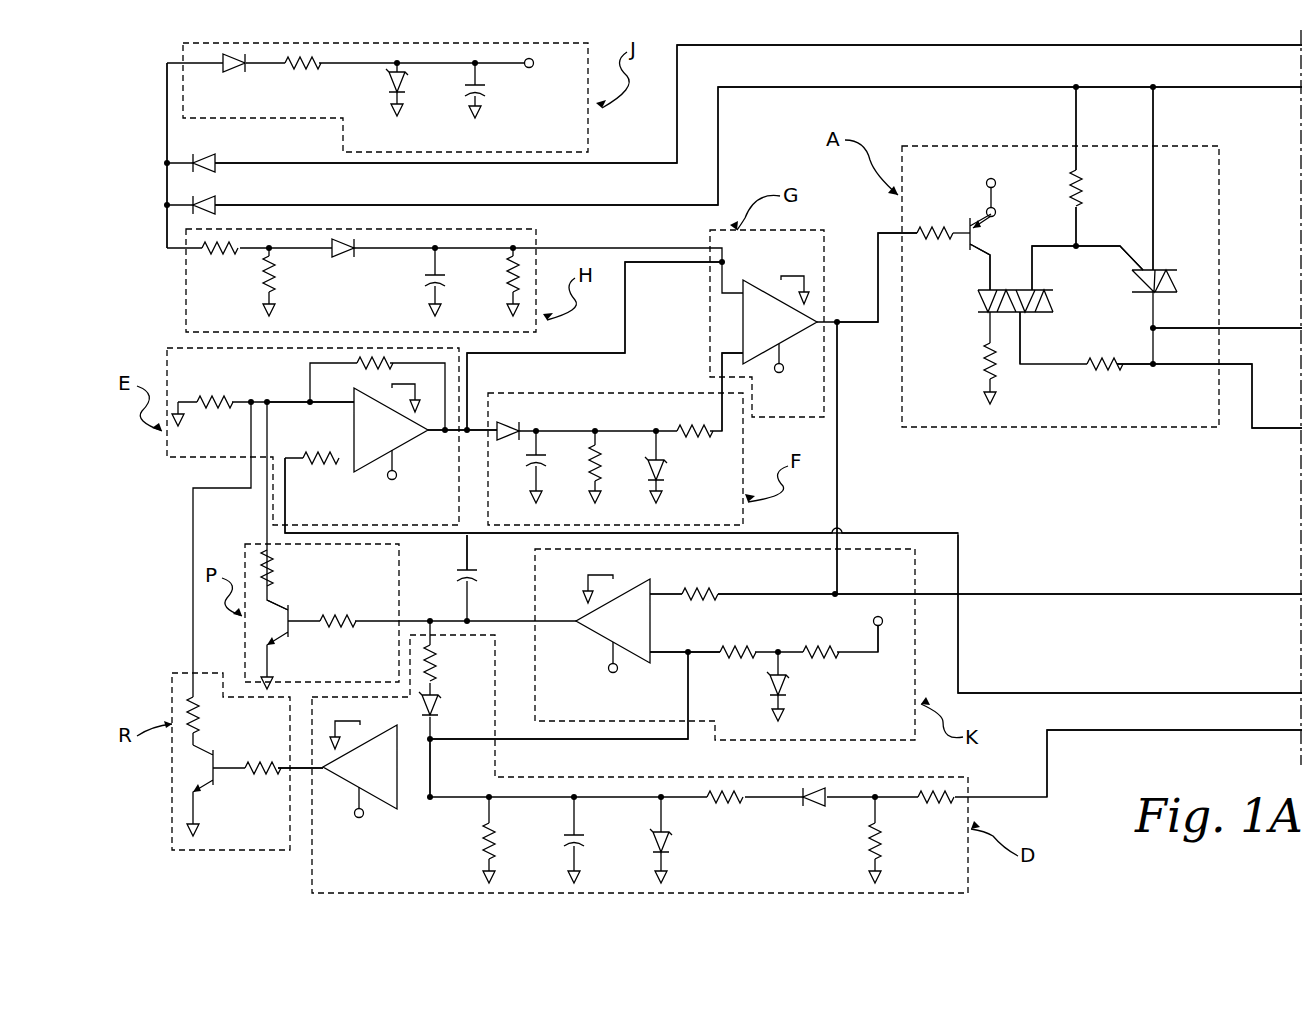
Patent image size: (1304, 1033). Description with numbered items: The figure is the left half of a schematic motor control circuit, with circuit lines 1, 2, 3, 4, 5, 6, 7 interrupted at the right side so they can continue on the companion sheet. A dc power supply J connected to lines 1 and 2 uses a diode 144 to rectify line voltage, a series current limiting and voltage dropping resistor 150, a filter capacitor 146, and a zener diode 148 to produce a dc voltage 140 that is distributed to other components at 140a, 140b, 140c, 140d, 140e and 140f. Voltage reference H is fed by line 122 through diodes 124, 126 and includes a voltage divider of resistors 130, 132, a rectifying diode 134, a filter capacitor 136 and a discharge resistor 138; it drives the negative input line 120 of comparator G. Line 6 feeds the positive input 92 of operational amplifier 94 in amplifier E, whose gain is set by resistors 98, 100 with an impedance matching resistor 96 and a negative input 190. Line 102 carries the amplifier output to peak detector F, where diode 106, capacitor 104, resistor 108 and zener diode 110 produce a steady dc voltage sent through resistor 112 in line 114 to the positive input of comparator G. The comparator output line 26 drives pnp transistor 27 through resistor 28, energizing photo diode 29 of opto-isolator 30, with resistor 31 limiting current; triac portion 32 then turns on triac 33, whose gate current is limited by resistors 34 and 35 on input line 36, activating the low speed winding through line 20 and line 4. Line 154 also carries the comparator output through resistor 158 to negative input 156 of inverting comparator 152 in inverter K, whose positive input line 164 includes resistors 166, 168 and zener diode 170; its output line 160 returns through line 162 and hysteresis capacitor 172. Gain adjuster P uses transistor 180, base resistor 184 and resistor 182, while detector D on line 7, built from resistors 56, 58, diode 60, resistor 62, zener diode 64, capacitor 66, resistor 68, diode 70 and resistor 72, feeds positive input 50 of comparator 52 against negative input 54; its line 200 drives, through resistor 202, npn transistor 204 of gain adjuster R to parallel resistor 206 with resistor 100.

The circuit line 1 is at (1276, 46).
The circuit line 2 is at (1276, 88).
The circuit line 3 is at (1276, 330).
The circuit line 4 is at (1276, 431).
The circuit line 5 is at (1276, 598).
The circuit line 6 is at (1276, 696).
The circuit line 7 is at (1276, 730).
The line 20 is at (1153, 107).
The output line of comparator G 26 is at (876, 306).
The pnp transistor 27 is at (963, 252).
The current limiting resistor 28 is at (949, 222).
The photo diode 29 is at (978, 298).
The opto-isolator 30 is at (1013, 288).
The current limiting resistor 31 is at (982, 360).
The triac portion 32 is at (1035, 310).
The triac 33 is at (1163, 268).
The resistor 34 is at (1080, 202).
The resistor 35 is at (1091, 371).
The line 36 is at (1095, 248).
The positive input 50 is at (403, 803).
The comparator 52 is at (354, 795).
The negative input 54 is at (430, 750).
The resistor 56 is at (873, 837).
The resistor 58 is at (937, 806).
The diode 60 is at (820, 806).
The current limiting resistor 62 is at (725, 801).
The zener diode 64 is at (661, 837).
The capacitor 66 is at (574, 837).
The resistor 68 is at (473, 850).
The diode 70 is at (438, 705).
The resistor 72 is at (438, 672).
The positive input 92 is at (346, 463).
The operational amplifier 94 is at (401, 446).
The impedance matching resistor 96 is at (324, 461).
The resistor 98 is at (358, 370).
The resistor 100 is at (221, 394).
The line 102 is at (468, 420).
The capacitor 104 is at (540, 494).
The diode 106 is at (503, 428).
The resistor 108 is at (597, 470).
The zener diode 110 is at (664, 470).
The input impedance matching resistor 112 is at (690, 429).
The line 114 is at (735, 354).
The line 120 is at (731, 294).
The line 122 is at (164, 210).
The diode 124 is at (214, 163).
The diode 126 is at (214, 205).
The resistor 130 is at (213, 255).
The resistor 132 is at (275, 282).
The diode 134 is at (342, 258).
The capacitor 136 is at (426, 268).
The resistor 138 is at (506, 267).
The dc voltage 140 is at (532, 66).
The dc voltage connection 140a is at (393, 480).
The dc voltage connection 140b is at (359, 818).
The dc voltage connection 140c is at (772, 368).
The dc voltage connection 140d is at (612, 674).
The dc voltage connection 140e is at (886, 628).
The dc voltage connection 140f is at (1000, 162).
The diode 144 is at (235, 75).
The capacitor 146 is at (485, 90).
The zener diode 148 is at (387, 120).
The resistor 150 is at (300, 66).
The inverting comparator 152 is at (653, 647).
The line 154 is at (839, 478).
The negative input 156 is at (661, 594).
The impedance matching resistor 158 is at (716, 594).
The output line 160 is at (536, 620).
The line 162 is at (625, 326).
The positive input line 164 is at (681, 663).
The current limiting resistor 166 is at (800, 647).
The impedance matching resistor 168 is at (735, 645).
The zener diode 170 is at (790, 675).
The capacitor 172 is at (467, 570).
The transistor 180 is at (295, 627).
The resistor 182 is at (270, 570).
The current limiting resistor 184 is at (330, 613).
The negative input 190 is at (328, 404).
The line 200 is at (303, 772).
The current limiting resistor 202 is at (281, 772).
The npn transistor 204 is at (215, 762).
The resistor 206 is at (203, 707).